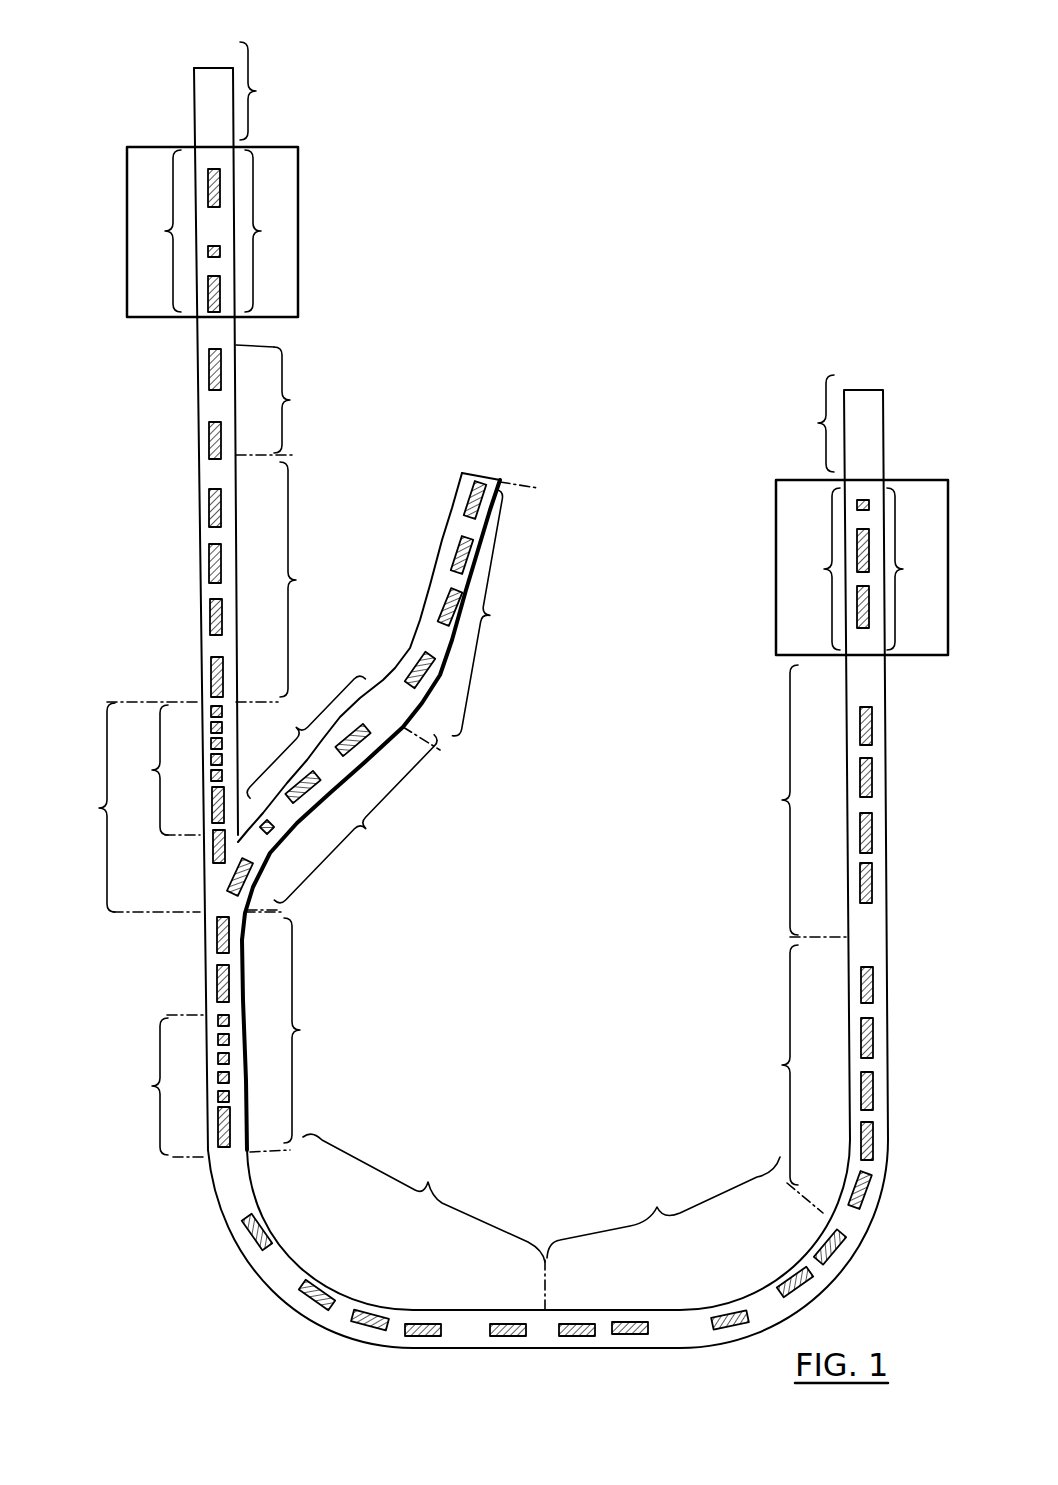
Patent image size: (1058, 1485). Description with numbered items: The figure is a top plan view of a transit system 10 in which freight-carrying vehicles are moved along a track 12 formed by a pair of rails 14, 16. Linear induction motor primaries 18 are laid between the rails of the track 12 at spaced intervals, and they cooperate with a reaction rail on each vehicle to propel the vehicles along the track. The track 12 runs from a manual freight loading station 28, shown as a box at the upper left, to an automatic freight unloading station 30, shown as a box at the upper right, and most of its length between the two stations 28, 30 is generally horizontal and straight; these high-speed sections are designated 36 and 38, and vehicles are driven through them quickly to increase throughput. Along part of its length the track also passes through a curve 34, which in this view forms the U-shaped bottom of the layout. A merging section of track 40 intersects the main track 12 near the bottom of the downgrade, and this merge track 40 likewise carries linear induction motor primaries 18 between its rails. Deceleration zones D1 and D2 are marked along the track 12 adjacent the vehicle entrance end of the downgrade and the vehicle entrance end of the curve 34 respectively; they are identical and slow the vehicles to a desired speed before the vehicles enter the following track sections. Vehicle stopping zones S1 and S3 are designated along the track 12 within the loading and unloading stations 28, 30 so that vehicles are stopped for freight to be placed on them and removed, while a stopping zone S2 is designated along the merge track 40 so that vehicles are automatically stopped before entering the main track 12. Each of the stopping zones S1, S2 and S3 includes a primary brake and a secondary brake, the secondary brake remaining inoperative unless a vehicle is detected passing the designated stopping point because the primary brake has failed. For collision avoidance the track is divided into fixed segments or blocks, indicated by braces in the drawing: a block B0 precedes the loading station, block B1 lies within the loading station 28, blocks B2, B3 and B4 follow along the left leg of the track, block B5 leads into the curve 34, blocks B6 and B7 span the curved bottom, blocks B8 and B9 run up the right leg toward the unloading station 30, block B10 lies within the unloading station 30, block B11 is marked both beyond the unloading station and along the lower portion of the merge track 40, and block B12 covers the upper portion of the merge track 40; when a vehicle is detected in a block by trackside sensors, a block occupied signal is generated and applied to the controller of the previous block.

The transit system 10 is at (657, 388).
The track 12 is at (188, 592).
The rail 14 is at (197, 390).
The rail 16 is at (270, 346).
The linear induction motor primary 18 is at (215, 510).
The manual freight loading station 28 is at (302, 256).
The automatic freight unloading station 30 is at (773, 612).
The curve 34 is at (288, 1332).
The straight track section 36 is at (352, 568).
The straight track section 38 is at (768, 897).
The merging section of track 40 is at (430, 525).
The track segment B0 is at (262, 91).
The block B1 is at (265, 231).
The block B2 is at (278, 400).
The block B3 is at (281, 582).
The block B4 is at (131, 807).
The block B5 is at (290, 1032).
The block B6 is at (424, 1223).
The block B7 is at (685, 1207).
The block B8 is at (795, 1061).
The block B9 is at (773, 800).
The block B10 is at (813, 569).
The block B11 is at (540, 643).
The block B12 is at (474, 616).
The vehicle stopping zone S1 is at (159, 231).
The stopping zone S2 is at (302, 733).
The vehicle stopping zone S3 is at (912, 569).
The deceleration zone D1 is at (159, 770).
The deceleration zone D2 is at (161, 1086).